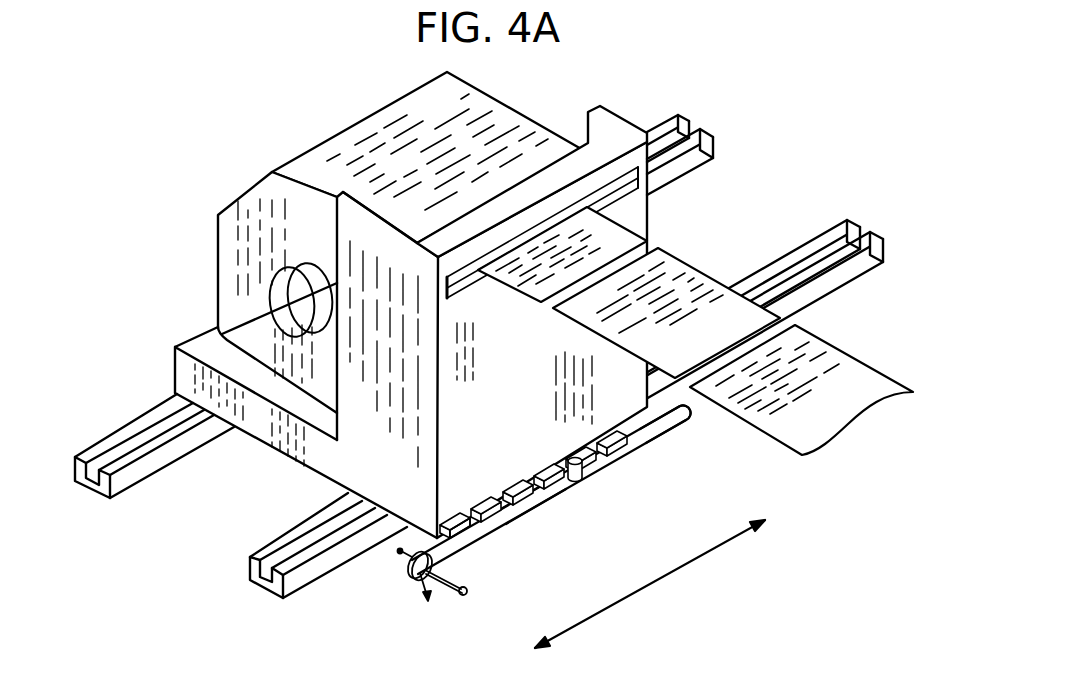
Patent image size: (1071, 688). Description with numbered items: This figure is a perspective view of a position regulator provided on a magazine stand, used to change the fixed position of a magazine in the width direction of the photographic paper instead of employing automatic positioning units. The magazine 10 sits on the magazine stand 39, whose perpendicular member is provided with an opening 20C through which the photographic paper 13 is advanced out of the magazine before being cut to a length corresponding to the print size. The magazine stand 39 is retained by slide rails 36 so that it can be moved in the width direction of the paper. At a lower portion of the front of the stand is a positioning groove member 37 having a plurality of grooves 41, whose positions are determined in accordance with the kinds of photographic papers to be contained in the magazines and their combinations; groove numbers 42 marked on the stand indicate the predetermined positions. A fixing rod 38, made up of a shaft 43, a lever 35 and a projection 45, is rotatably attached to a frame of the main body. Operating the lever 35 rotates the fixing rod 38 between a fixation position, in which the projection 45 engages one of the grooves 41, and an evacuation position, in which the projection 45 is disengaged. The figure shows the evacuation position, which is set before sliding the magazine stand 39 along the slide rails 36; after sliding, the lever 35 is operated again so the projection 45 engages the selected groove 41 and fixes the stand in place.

The magazine 10 is at (272, 172).
The magazine stand 39 is at (600, 108).
The opening 20C is at (622, 192).
The photographic paper 13 is at (806, 330).
The positioning groove member 37 is at (540, 456).
The groove numbers 42 is at (455, 500).
The projection 45 is at (582, 479).
The fixing rod 38 is at (548, 513).
The grooves 41 is at (660, 433).
The shaft 43 is at (478, 545).
The lever 35 is at (460, 595).
The slide rails 36 is at (247, 562).